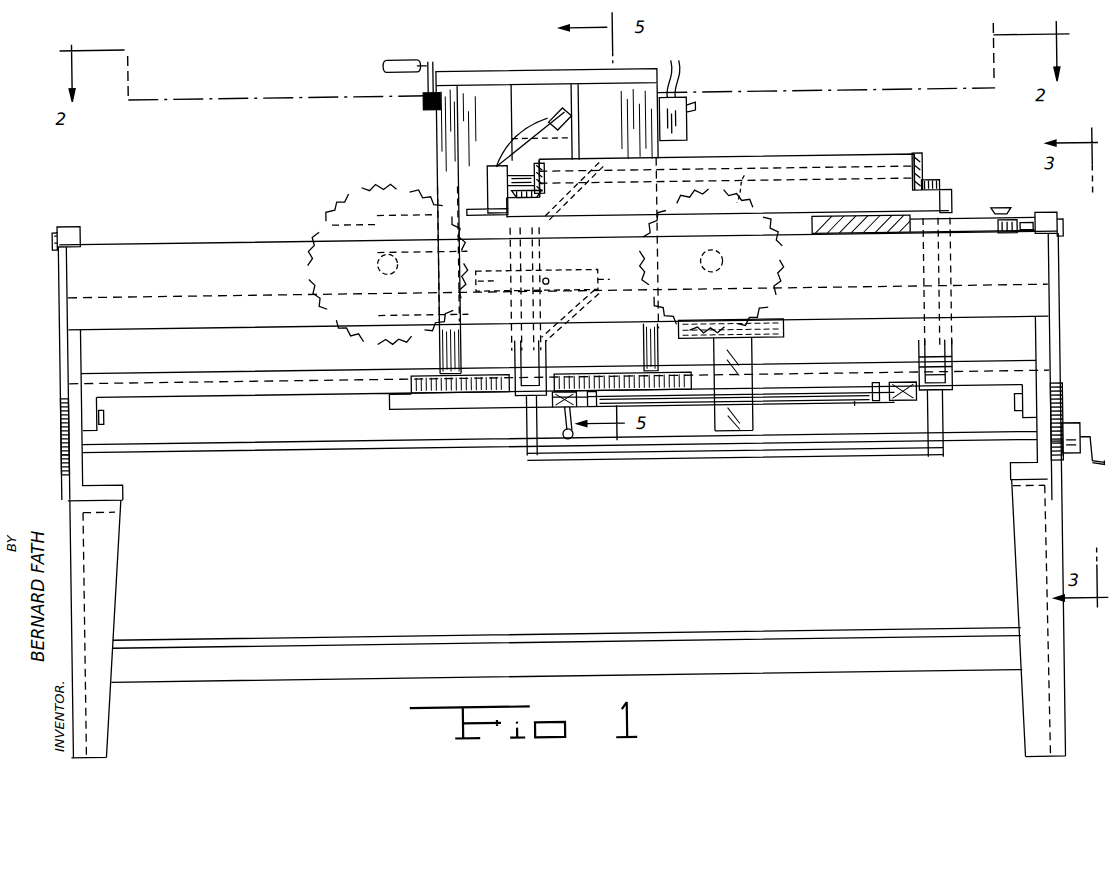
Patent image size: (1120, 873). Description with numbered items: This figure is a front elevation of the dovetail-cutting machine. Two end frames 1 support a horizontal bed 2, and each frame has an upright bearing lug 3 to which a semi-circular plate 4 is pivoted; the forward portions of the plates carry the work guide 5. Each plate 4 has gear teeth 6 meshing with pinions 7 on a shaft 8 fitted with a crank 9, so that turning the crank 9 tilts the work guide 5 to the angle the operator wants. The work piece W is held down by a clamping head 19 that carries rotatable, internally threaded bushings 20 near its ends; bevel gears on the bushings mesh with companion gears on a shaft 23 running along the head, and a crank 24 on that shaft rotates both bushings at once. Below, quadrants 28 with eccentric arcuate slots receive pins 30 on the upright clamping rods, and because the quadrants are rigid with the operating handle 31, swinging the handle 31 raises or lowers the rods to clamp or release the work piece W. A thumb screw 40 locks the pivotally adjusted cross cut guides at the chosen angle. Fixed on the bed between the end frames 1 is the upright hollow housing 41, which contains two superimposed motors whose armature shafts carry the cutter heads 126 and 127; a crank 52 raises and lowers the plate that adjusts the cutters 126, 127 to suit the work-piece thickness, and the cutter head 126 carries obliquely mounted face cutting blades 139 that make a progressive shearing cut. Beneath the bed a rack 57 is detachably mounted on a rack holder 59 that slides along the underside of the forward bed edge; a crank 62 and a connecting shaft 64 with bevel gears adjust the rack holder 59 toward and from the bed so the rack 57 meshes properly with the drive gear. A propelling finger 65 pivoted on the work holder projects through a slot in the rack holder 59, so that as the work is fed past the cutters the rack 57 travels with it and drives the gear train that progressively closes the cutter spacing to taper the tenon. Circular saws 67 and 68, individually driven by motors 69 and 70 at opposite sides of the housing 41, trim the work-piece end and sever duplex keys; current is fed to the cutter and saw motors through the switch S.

The end frames 1 is at (106, 722).
The horizontal bed 2 is at (268, 392).
The upright bearing lugs 3 is at (75, 222).
The semi-circular plates 4 is at (58, 340).
The work guide 5 is at (160, 240).
The gear teeth 6 is at (60, 410).
The pinions 7 is at (61, 464).
The shaft 8 is at (166, 448).
The crank 9 is at (1082, 450).
The clamping head 19 is at (818, 156).
The rotatable bushings 20 is at (936, 184).
The shaft 23 is at (855, 162).
The crank 24 is at (480, 210).
The quadrant 28 is at (512, 356).
The pin 30 is at (918, 352).
The operating handle 31 is at (754, 458).
The thumb screw 40 is at (1004, 214).
The housing 41 is at (478, 70).
The crank 52 is at (428, 108).
The rack 57 is at (420, 396).
The rack holder 59 is at (690, 412).
The crank 62 is at (560, 440).
The shaft 64 is at (858, 408).
The propelling finger 65 is at (758, 408).
The circular saw 67 is at (748, 176).
The circular saw 68 is at (344, 190).
The motor 69 is at (790, 272).
The motor 70 is at (314, 216).
The cutter head 126 is at (580, 150).
The cutter head 127 is at (580, 308).
The face cutting blades 139 is at (562, 112).
The switch S is at (698, 126).
The work piece W is at (861, 246).